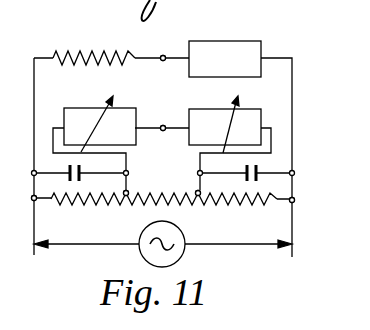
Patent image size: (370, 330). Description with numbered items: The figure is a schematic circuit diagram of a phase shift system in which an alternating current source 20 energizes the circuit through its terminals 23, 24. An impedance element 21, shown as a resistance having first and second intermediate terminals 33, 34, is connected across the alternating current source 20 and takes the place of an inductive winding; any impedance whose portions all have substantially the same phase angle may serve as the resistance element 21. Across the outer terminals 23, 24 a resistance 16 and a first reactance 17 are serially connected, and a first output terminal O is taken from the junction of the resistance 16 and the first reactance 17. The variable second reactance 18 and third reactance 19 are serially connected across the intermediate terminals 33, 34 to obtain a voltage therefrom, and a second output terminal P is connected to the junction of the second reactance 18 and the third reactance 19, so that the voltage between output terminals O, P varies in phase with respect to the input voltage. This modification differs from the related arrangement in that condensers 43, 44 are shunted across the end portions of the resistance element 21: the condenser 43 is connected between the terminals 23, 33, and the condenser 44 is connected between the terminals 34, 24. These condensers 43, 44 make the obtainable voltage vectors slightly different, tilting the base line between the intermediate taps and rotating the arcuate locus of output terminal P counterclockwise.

The resistance 16 is at (101, 52).
The first reactance 17 is at (245, 41).
The second reactance 18 is at (79, 108).
The third reactance 19 is at (258, 109).
The alternating current source 20 is at (183, 238).
The impedance element 21 is at (94, 205).
The terminal 23 is at (32, 198).
The terminal 24 is at (294, 200).
The first intermediate terminal 33 is at (128, 193).
The second intermediate terminal 34 is at (201, 194).
The condenser 43 is at (83, 170).
The condenser 44 is at (258, 171).
The first output terminal O is at (164, 56).
The second output terminal P is at (164, 126).